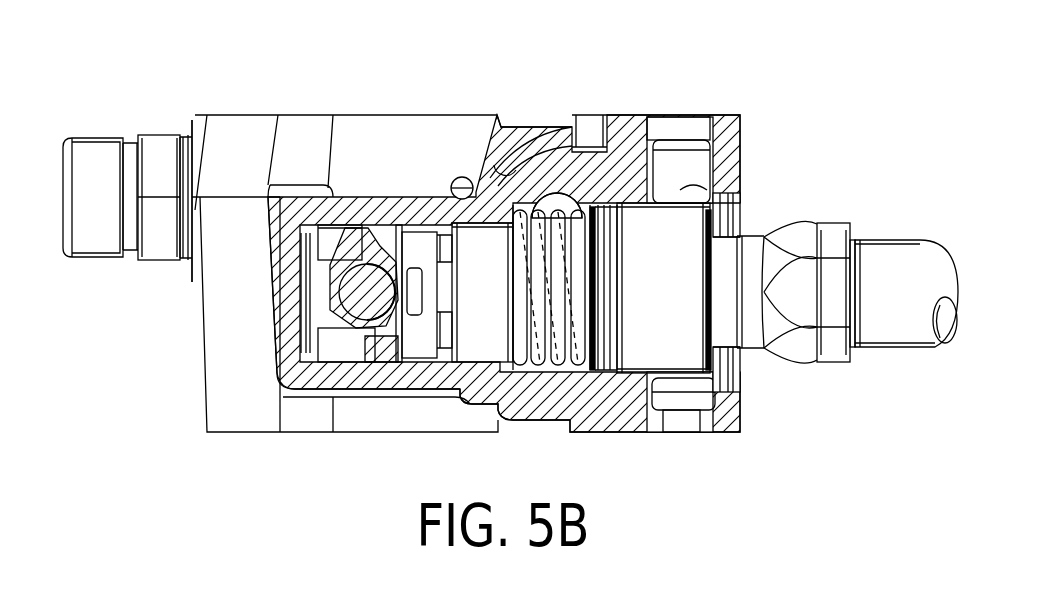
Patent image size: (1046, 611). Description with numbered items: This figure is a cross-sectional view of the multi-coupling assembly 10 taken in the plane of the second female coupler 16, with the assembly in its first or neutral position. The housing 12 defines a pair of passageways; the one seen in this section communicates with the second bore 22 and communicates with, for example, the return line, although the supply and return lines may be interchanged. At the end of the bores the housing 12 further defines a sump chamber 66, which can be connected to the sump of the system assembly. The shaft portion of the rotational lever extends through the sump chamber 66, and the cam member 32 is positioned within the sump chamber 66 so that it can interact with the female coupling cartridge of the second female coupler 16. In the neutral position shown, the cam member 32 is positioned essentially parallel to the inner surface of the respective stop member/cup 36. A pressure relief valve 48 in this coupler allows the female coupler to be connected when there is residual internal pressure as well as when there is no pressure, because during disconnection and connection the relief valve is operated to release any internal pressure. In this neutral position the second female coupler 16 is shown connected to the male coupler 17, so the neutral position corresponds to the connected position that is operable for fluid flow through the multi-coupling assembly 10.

The multi-coupling assembly 10 is at (96, 80).
The housing 12 is at (206, 358).
The second female coupler 16 is at (484, 178).
The male coupler 17 is at (908, 348).
The second bore 22 is at (556, 207).
The cam member 32 is at (335, 282).
The stop member/cup 36 is at (380, 232).
The pressure relief valve 48 is at (372, 300).
The sump chamber 66 is at (333, 349).